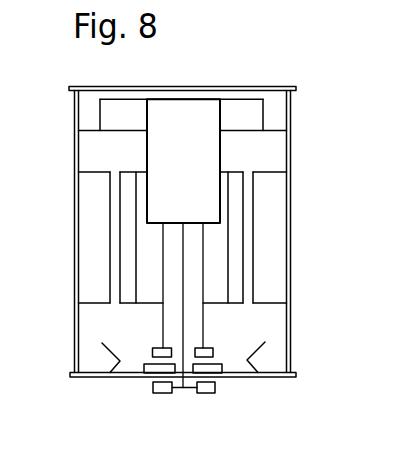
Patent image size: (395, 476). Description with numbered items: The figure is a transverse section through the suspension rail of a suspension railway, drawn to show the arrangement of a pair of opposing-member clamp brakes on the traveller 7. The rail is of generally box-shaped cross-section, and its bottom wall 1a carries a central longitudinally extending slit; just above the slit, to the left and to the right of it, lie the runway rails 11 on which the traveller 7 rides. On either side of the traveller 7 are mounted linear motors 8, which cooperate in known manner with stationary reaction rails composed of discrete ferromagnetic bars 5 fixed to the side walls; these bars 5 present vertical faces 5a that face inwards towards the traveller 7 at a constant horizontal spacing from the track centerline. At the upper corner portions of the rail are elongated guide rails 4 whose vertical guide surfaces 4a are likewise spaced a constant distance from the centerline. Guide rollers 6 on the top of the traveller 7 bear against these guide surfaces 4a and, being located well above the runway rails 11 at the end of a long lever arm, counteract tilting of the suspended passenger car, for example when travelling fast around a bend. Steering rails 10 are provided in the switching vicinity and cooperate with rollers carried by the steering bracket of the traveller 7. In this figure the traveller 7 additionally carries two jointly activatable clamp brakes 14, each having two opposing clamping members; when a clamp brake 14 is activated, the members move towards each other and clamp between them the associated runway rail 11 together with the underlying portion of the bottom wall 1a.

The bottom wall 1a is at (233, 378).
The guide rail 4 is at (221, 133).
The guide surface 4a is at (260, 113).
The ferromagnetic bar 5 is at (220, 237).
The vertical face 5a is at (252, 250).
The guide roller 6 is at (240, 112).
The traveller 7 is at (147, 243).
The linear motor 8 is at (128, 288).
The steering rail 10 is at (262, 355).
The runway rail 11 is at (220, 377).
The clamp brake 14 is at (153, 352).